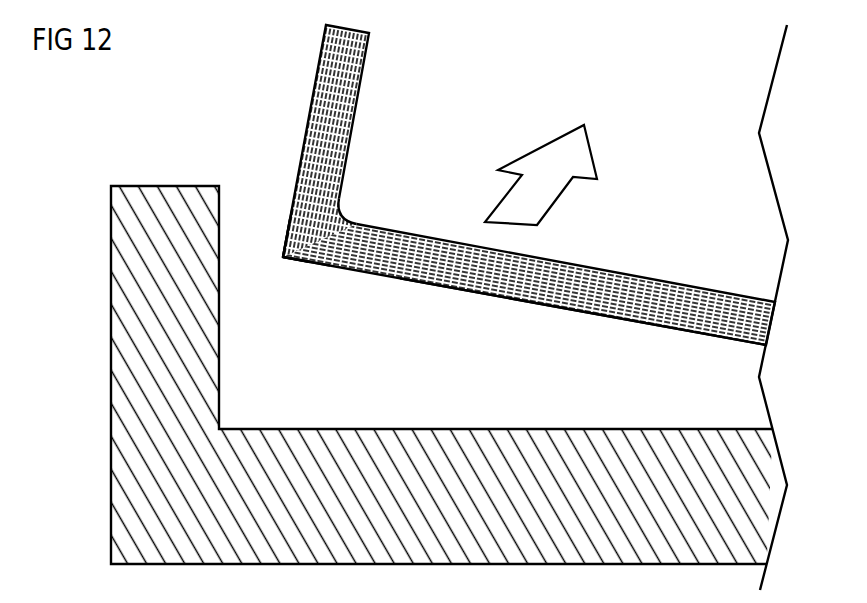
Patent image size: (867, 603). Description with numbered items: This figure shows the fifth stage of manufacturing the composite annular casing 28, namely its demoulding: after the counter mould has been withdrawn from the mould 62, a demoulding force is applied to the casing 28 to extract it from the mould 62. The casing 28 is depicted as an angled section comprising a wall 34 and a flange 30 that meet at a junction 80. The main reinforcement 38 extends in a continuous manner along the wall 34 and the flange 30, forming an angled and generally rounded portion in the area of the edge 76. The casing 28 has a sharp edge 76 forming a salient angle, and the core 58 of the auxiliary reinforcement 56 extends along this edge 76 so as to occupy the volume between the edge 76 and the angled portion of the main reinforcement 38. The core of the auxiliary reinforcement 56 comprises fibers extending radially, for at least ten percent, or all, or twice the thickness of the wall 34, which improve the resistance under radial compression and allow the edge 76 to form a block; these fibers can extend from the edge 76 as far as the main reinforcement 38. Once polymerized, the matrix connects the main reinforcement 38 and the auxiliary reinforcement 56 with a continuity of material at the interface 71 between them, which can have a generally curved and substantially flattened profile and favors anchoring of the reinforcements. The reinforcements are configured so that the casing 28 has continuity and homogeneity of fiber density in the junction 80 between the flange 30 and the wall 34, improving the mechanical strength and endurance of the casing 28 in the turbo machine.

The composite annular casing 28 is at (641, 128).
The flange 30 is at (357, 108).
The wall 34 is at (697, 287).
The main reinforcement 38 is at (603, 316).
The auxiliary reinforcement 56 is at (308, 263).
The core 58 is at (297, 261).
The mould 62 is at (137, 258).
The interface 71 is at (338, 221).
The edge 76 is at (285, 259).
The junction 80 is at (288, 232).